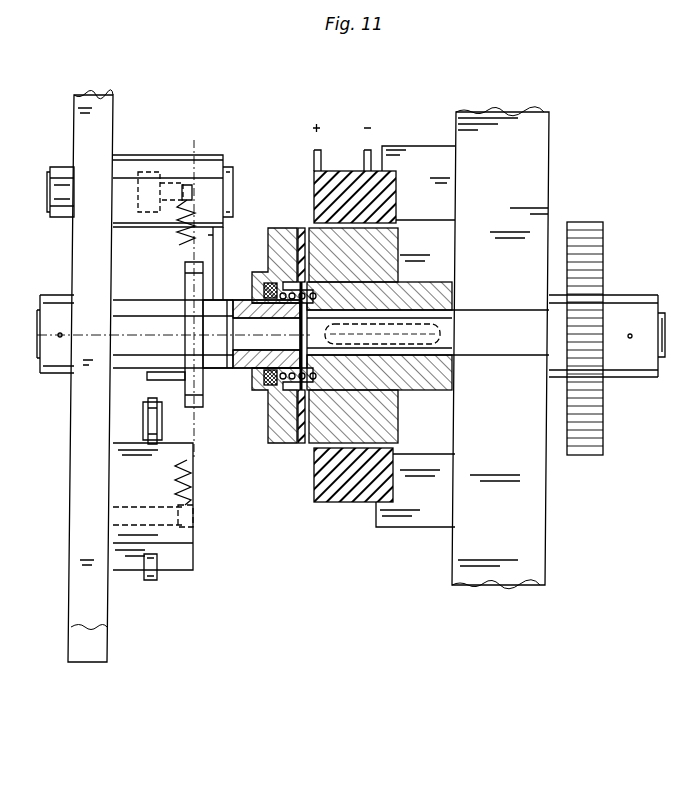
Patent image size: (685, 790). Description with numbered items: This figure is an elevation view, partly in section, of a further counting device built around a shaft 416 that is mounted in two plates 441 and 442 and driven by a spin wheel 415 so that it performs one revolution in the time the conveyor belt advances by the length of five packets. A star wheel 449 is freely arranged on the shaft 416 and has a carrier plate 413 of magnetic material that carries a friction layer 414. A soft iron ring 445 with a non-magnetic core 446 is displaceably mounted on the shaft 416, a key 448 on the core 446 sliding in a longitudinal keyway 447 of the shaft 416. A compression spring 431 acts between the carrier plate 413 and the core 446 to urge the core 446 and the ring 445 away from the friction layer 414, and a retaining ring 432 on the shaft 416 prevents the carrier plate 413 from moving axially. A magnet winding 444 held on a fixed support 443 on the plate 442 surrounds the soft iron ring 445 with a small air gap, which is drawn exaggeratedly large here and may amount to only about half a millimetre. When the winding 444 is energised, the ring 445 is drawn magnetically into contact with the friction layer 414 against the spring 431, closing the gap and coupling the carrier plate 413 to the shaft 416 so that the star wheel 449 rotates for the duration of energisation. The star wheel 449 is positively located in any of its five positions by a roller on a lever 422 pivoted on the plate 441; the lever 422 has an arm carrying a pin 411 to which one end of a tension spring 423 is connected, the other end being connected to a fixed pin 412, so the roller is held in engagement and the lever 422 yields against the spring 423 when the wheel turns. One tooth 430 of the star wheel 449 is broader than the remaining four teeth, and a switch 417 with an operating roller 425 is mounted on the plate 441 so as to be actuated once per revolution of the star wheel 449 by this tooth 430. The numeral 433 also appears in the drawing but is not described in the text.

The pin 411 is at (194, 290).
The fixed pin 412 is at (190, 522).
The carrier plate 413 is at (278, 232).
The friction layer 414 is at (301, 228).
The spin wheel 415 is at (592, 283).
The shaft 416 is at (660, 360).
The switch 417 is at (123, 484).
The lever 422 is at (213, 270).
The tension spring 423 is at (184, 240).
The operating roller 425 is at (148, 422).
The tooth 430 is at (145, 377).
The compression spring 431 is at (300, 378).
The retaining ring 432 is at (248, 302).
The flange 433 is at (250, 393).
The plate 441 is at (100, 97).
The plate 442 is at (538, 147).
The fixed support 443 is at (415, 160).
The magnet winding 444 is at (342, 171).
The soft iron ring 445 is at (387, 249).
The non-magnetic core 446 is at (448, 375).
The longitudinal keyway 447 is at (432, 330).
The key 448 is at (448, 340).
The star wheel 449 is at (200, 402).